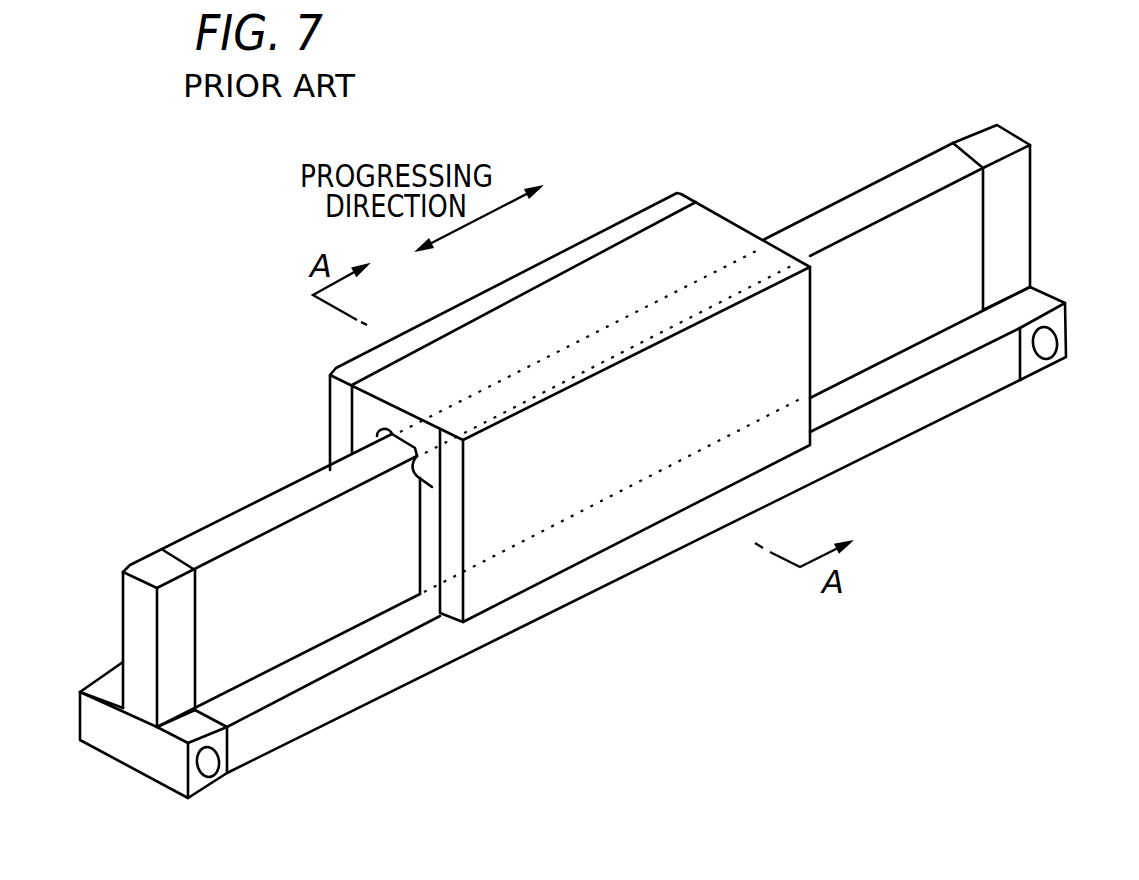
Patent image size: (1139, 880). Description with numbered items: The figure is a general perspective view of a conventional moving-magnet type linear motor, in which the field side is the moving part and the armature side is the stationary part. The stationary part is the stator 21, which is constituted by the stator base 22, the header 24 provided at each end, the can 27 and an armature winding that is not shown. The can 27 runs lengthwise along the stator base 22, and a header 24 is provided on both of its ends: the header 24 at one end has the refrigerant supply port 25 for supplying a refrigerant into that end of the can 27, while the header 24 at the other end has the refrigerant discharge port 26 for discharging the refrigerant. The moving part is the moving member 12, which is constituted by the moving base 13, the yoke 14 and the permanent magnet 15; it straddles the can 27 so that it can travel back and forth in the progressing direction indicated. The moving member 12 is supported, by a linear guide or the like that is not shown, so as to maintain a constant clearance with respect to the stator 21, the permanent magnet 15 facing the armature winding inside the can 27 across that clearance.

The moving member 12 is at (637, 210).
The moving base 13 is at (723, 230).
The yoke 14 is at (533, 567).
The permanent magnet 15 is at (352, 445).
The stator 21 is at (230, 516).
The stator base 22 is at (673, 533).
The header 24 is at (138, 760).
The refrigerant supply port 25 is at (215, 773).
The refrigerant discharge port 26 is at (1050, 344).
The can 27 is at (863, 340).